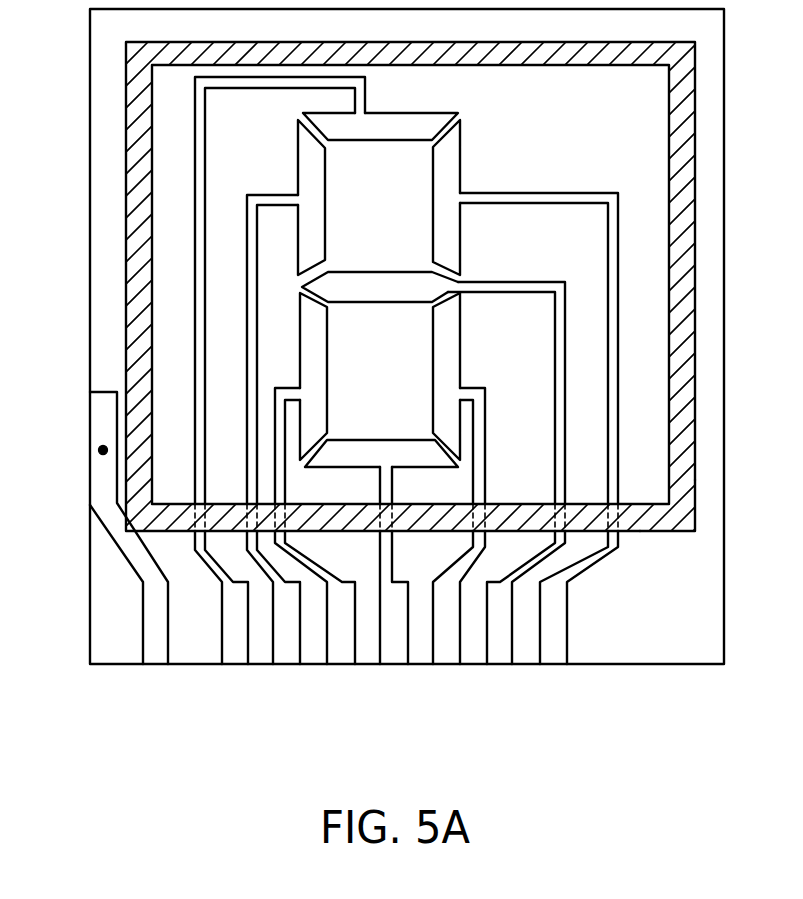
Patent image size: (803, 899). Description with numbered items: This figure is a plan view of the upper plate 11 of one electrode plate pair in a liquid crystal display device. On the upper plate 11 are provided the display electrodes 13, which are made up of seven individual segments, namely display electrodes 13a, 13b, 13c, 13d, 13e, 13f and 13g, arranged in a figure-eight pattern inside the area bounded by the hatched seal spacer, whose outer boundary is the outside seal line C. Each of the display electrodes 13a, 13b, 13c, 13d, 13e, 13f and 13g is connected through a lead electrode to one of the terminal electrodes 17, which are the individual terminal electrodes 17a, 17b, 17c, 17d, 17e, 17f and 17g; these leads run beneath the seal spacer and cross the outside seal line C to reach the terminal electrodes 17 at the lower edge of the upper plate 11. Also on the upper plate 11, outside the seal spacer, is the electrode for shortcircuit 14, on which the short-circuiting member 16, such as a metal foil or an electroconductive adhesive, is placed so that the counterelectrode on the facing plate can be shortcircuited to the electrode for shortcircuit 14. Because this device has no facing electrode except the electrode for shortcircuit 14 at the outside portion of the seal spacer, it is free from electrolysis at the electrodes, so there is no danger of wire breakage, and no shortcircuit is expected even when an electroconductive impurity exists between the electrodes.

The upper plate 11 is at (718, 112).
The display electrodes 13 is at (383, 270).
The display electrode 13a is at (402, 122).
The display electrode 13b is at (308, 157).
The display electrode 13c is at (318, 338).
The display electrode 13d is at (362, 448).
The display electrode 13e is at (452, 333).
The display electrode 13f is at (378, 275).
The display electrode 13g is at (452, 175).
The electrode for shortcircuit 14 is at (102, 407).
The short-circuiting member 16 is at (98, 452).
The terminal electrodes 17 is at (406, 419).
The terminal electrode 17a is at (236, 657).
The terminal electrode 17b is at (290, 657).
The terminal electrode 17c is at (345, 657).
The terminal electrode 17d is at (395, 657).
The terminal electrode 17e is at (448, 660).
The terminal electrode 17f is at (502, 657).
The terminal electrode 17g is at (539, 453).
The outside seal line C is at (658, 532).